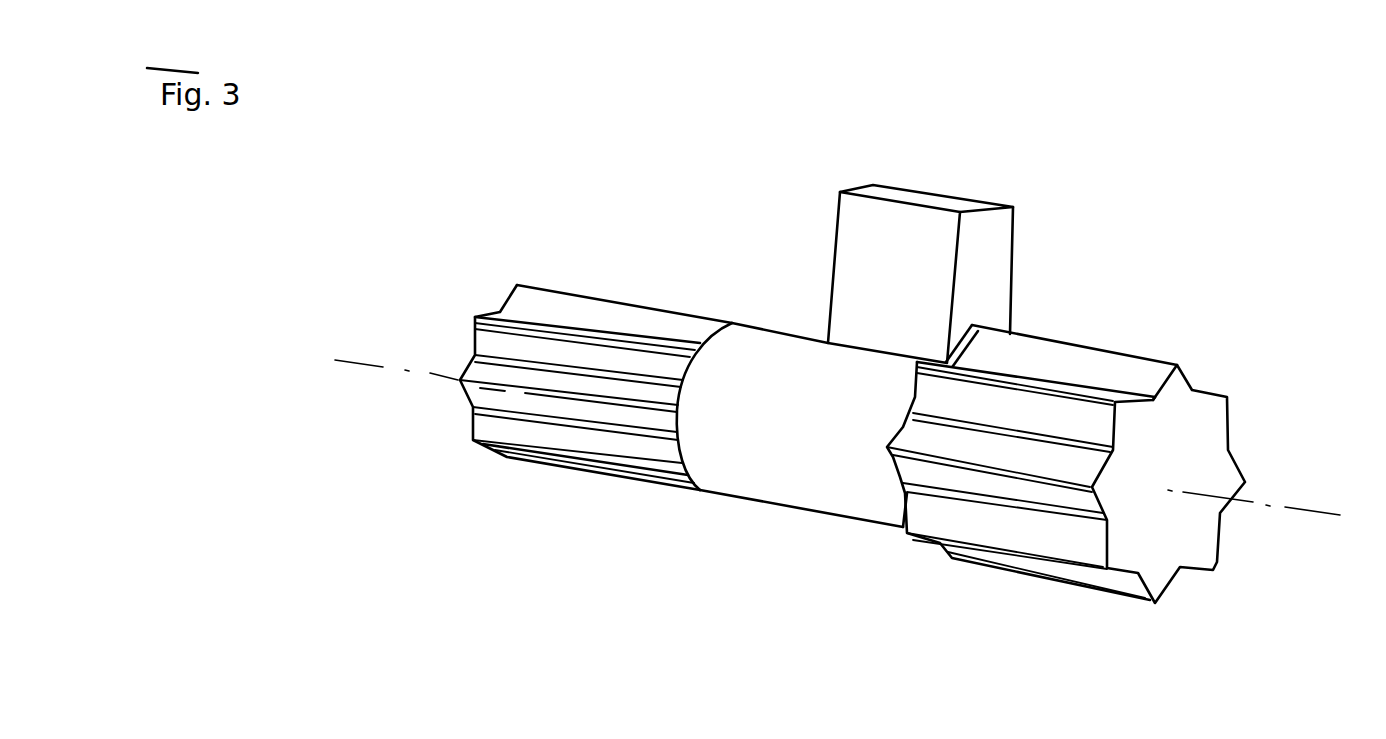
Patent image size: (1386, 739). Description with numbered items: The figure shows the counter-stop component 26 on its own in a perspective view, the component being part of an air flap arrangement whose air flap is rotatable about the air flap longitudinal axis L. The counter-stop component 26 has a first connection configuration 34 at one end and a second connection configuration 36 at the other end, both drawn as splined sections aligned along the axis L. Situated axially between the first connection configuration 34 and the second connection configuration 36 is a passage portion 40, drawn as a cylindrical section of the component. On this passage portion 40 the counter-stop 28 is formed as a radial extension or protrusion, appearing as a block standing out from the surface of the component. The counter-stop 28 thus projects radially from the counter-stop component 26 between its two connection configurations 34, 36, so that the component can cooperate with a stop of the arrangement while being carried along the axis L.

The counter-stop component 26 is at (847, 421).
The counter-stop 28 is at (915, 279).
The first connection configuration 34 is at (542, 303).
The second connection configuration 36 is at (1137, 378).
The passage portion 40 is at (747, 373).
The air flap longitudinal axis L is at (1313, 512).